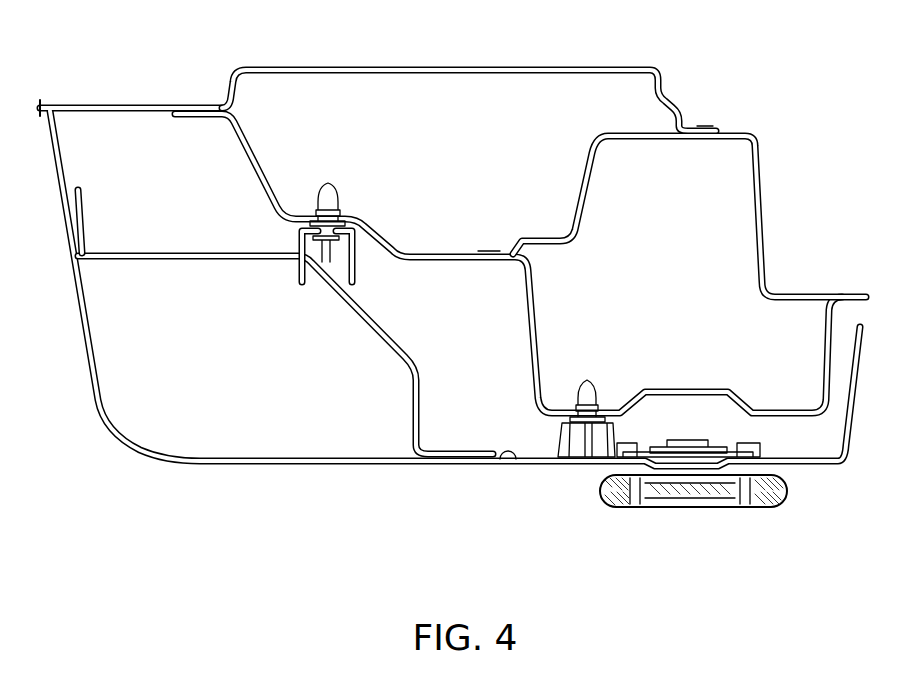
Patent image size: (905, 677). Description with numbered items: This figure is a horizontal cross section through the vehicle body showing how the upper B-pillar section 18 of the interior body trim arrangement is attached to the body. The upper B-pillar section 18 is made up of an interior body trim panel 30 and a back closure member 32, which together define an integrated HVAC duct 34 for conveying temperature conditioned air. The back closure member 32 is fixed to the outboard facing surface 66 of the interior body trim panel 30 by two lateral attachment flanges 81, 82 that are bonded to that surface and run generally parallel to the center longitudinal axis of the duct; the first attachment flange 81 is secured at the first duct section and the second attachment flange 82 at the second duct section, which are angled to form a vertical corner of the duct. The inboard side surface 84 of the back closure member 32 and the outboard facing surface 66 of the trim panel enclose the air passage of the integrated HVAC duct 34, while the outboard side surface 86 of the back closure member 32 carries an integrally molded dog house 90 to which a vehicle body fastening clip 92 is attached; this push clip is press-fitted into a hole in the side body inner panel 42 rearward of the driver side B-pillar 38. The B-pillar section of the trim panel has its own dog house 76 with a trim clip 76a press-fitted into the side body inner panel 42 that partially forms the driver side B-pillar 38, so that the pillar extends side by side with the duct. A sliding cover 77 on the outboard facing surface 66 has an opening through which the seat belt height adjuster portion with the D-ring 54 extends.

The upper B-pillar section 18 is at (450, 339).
The interior body trim panel 30 is at (272, 470).
The back closure member 32 is at (460, 338).
The integrated HVAC duct 34 is at (460, 361).
The driver side B-pillar 38 is at (767, 187).
The side body inner panel 42 is at (257, 149).
The D-ring 54 is at (745, 508).
The outboard facing surface 66 is at (510, 462).
The dog house 76 is at (573, 460).
The trim clip 76a is at (588, 382).
The sliding cover 77 is at (735, 445).
The first attachment flange 81 is at (447, 453).
The second attachment flange 82 is at (85, 208).
The inboard side surface 84 is at (212, 262).
The outboard side surface 86 is at (285, 320).
The dog house 90 is at (355, 248).
The vehicle body fastening clip 92 is at (336, 199).